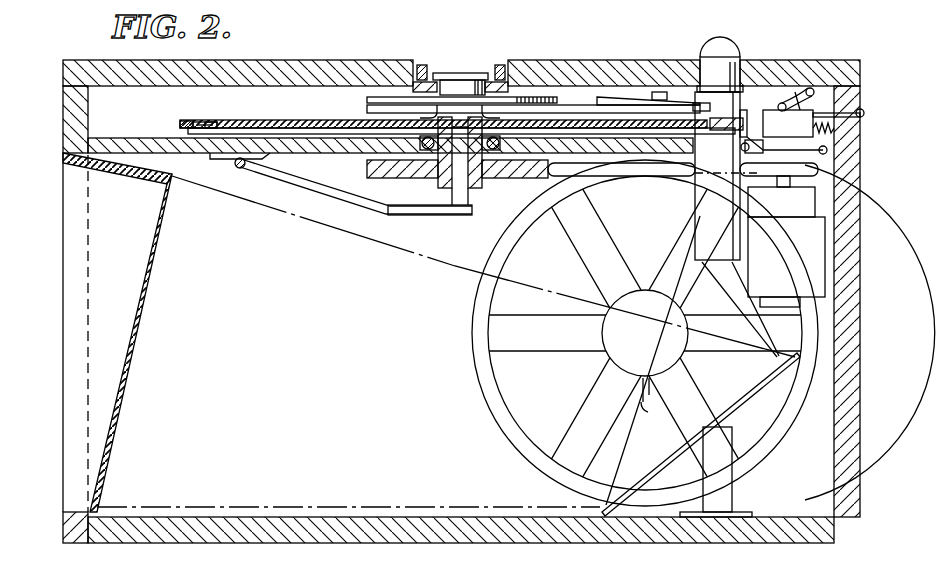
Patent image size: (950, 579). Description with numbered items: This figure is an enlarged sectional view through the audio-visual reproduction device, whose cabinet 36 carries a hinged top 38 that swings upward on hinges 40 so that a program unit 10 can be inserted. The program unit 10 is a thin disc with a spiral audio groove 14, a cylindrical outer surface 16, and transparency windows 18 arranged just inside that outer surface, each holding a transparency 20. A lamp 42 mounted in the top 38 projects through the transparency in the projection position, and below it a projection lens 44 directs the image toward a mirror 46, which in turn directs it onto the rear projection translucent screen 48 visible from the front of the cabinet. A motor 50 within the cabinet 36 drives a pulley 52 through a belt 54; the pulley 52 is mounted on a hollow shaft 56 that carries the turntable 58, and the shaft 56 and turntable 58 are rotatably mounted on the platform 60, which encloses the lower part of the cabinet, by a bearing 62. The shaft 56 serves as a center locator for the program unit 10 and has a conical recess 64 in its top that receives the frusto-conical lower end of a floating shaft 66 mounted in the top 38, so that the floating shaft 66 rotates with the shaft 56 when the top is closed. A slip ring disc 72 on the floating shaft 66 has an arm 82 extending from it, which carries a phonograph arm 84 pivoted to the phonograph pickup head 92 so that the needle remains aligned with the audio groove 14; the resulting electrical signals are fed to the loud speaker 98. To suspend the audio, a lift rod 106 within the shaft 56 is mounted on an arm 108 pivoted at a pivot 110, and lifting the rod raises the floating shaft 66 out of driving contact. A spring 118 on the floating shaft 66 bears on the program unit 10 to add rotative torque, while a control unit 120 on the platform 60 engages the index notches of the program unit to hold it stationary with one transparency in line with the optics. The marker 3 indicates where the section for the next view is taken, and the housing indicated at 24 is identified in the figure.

The section line 3- 3 is at (52, 117).
The program unit 10 is at (435, 106).
The spiral audio groove 14 is at (272, 120).
The cylindrical outer surface 16 is at (182, 124).
The transparency windows 18 is at (200, 122).
The transparency 20 is at (213, 122).
The housing 24 is at (118, 552).
The cabinet 36 is at (848, 410).
The hinged top 38 is at (845, 66).
The hinges 40 is at (862, 118).
The lamp 42 is at (722, 75).
The projection lens 44 is at (690, 215).
The mirror 46 is at (742, 398).
The rear projection translucent screen 48 is at (145, 296).
The motor 50 is at (803, 242).
The pulley 52 is at (520, 188).
The belt 54 is at (612, 180).
The shaft 56 is at (395, 213).
The turntable 58 is at (330, 135).
The platform 60 is at (190, 157).
The bearing 62 is at (425, 148).
The conical recess 64 is at (447, 117).
The floating shaft 66 is at (462, 88).
The slip ring disc 72 is at (532, 98).
The arm 82 is at (588, 97).
The phonograph arm 84 is at (628, 100).
The phonograph pickup head 92 is at (700, 60).
The loud speaker 98 is at (478, 343).
The lift rod 106 is at (447, 208).
The arm 108 is at (332, 218).
The pivot 110 is at (243, 168).
The spring 118 is at (425, 115).
The control unit 120 is at (770, 100).